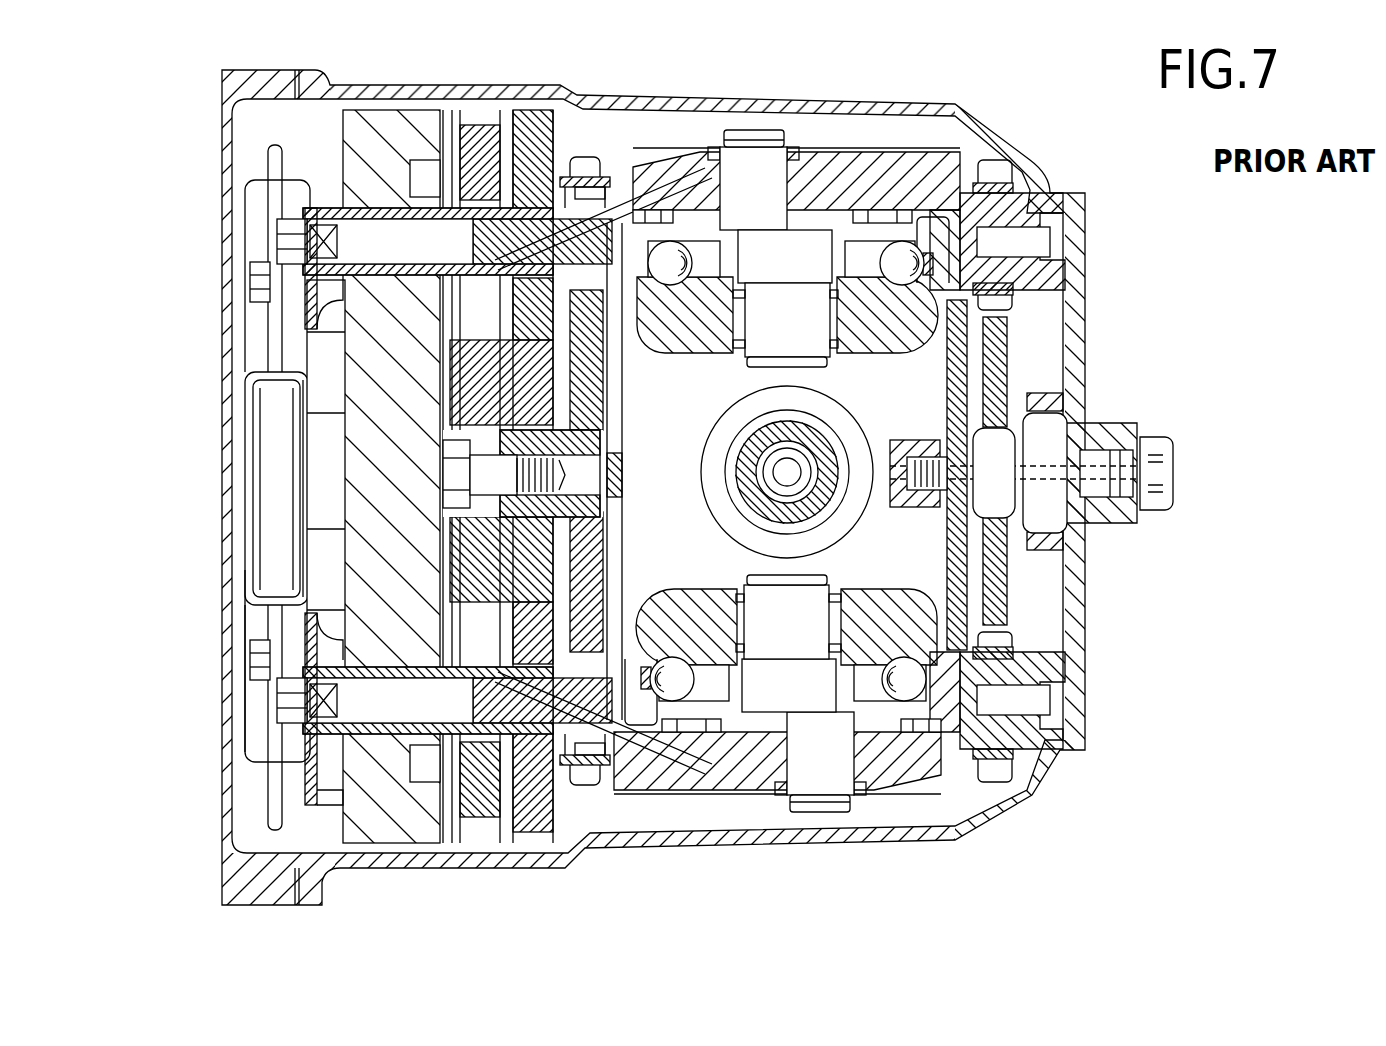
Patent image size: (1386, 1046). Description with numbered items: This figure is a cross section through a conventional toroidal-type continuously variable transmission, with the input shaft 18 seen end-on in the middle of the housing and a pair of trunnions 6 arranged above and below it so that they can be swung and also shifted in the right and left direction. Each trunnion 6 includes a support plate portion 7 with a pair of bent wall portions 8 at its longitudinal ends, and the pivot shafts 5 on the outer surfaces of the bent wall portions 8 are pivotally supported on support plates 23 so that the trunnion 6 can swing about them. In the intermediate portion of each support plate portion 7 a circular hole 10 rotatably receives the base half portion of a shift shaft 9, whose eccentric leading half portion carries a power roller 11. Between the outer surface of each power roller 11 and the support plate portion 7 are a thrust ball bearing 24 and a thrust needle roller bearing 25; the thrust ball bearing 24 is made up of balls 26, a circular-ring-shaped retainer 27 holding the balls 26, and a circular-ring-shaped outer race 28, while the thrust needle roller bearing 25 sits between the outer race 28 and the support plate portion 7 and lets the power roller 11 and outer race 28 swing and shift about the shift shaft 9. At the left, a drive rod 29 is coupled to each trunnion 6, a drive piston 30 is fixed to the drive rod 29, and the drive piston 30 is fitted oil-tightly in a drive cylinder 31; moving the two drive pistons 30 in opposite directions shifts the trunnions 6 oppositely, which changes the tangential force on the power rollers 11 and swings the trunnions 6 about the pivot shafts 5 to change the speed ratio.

The pivot shaft 5 is at (585, 172).
The trunnion 6 is at (958, 200).
The support plate portion 7 is at (893, 185).
The bent wall portion 8 is at (985, 200).
The shift shaft 9 is at (768, 245).
The circular hole 10 is at (730, 150).
The power roller 11 is at (923, 340).
The input shaft 18 is at (740, 470).
The support plate 23 is at (624, 533).
The thrust ball bearing 24 is at (878, 352).
The thrust needle roller bearing 25 is at (845, 210).
The ball 26 is at (670, 250).
The retainer 27 is at (651, 290).
The outer race 28 is at (932, 205).
The drive rod 29 is at (385, 222).
The drive piston 30 is at (500, 140).
The drive cylinder 31 is at (475, 150).